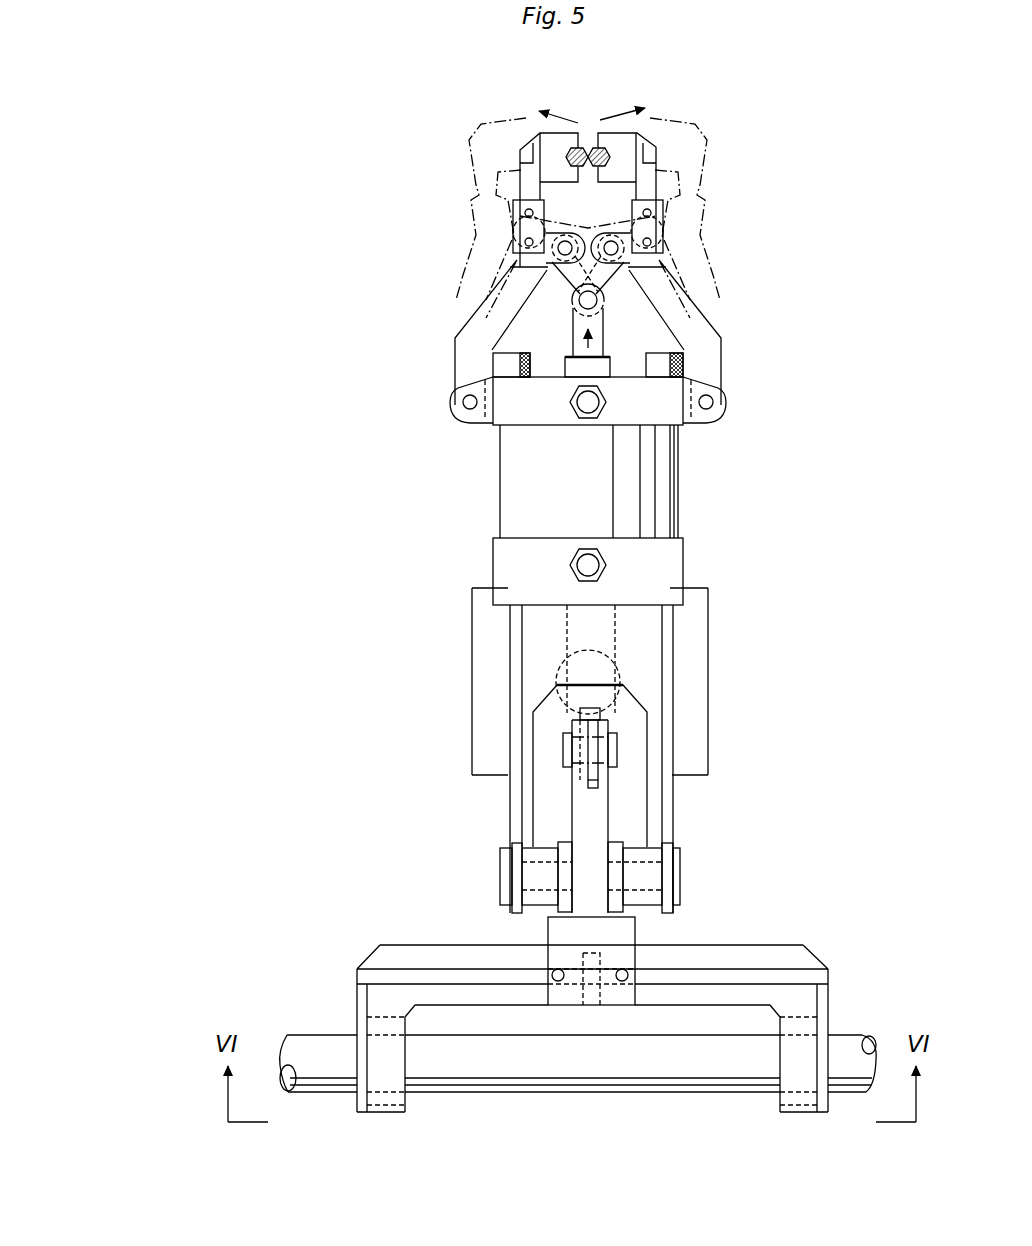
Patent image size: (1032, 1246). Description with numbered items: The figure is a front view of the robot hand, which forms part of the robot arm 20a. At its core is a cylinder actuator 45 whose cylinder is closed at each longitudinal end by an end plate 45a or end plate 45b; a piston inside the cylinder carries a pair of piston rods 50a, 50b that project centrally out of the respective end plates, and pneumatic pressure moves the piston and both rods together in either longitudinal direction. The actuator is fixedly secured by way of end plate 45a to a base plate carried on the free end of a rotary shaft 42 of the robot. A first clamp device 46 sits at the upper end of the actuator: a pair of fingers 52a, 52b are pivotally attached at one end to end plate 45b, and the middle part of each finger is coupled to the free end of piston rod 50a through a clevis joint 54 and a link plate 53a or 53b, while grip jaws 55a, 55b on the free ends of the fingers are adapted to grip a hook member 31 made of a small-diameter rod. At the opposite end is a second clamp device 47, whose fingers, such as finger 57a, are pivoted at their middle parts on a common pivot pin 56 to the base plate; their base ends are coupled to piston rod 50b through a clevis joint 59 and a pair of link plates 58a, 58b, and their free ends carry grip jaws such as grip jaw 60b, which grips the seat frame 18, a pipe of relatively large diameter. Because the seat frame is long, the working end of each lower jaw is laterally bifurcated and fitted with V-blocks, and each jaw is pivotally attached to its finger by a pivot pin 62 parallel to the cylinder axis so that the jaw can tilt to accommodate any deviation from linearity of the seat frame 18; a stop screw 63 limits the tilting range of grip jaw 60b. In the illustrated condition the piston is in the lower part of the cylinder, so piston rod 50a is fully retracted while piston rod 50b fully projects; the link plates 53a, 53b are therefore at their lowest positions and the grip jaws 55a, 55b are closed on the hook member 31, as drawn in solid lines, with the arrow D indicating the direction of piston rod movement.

The seat frame 18 is at (633, 1093).
The robot arm 20a is at (789, 403).
The hook member 31 is at (585, 147).
The rotary shaft 42 is at (618, 660).
The cylinder actuator 45 is at (683, 482).
The end plate 45a is at (684, 563).
The end plate 45b is at (678, 420).
The first clamp device 46 is at (729, 237).
The second clamp device 47 is at (786, 945).
The piston rod 50a is at (565, 362).
The piston rod 50b is at (568, 655).
The finger 52a is at (466, 333).
The finger 52b is at (694, 319).
The link plate 53a is at (558, 283).
The link plate 53b is at (618, 283).
The clevis joint 54 is at (604, 320).
The grip jaw 55a is at (527, 134).
The grip jaw 55b is at (650, 134).
The pivot pin 56 is at (638, 864).
The finger 57a is at (575, 820).
The link plate 58a is at (598, 772).
The link plate 58b is at (578, 768).
The clevis joint 59 is at (607, 713).
The grip jaw 60b is at (412, 947).
The pivot pin 62 is at (600, 1000).
The stop screw 63 is at (624, 968).
The direction of movement D is at (583, 340).